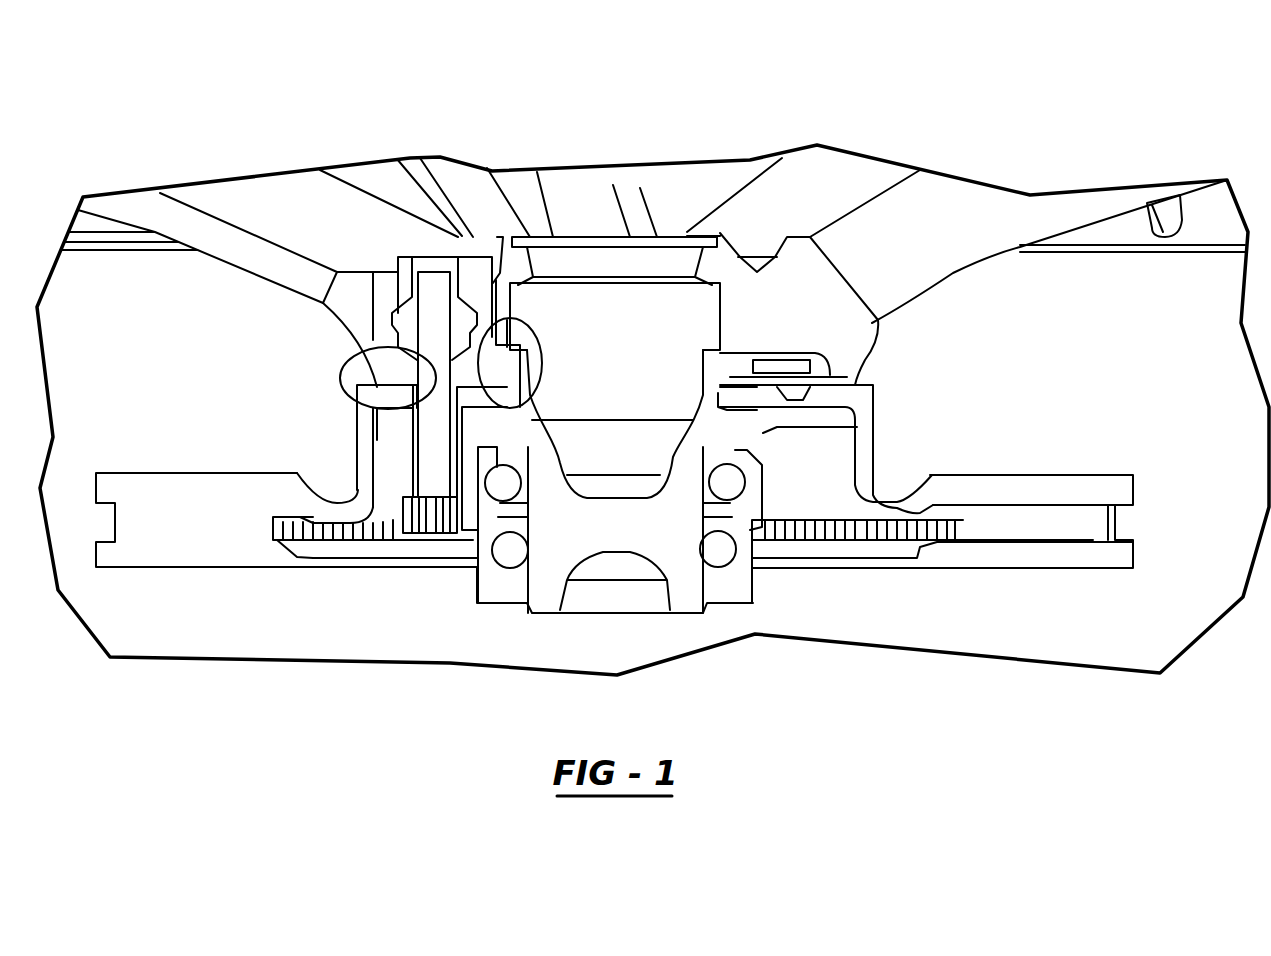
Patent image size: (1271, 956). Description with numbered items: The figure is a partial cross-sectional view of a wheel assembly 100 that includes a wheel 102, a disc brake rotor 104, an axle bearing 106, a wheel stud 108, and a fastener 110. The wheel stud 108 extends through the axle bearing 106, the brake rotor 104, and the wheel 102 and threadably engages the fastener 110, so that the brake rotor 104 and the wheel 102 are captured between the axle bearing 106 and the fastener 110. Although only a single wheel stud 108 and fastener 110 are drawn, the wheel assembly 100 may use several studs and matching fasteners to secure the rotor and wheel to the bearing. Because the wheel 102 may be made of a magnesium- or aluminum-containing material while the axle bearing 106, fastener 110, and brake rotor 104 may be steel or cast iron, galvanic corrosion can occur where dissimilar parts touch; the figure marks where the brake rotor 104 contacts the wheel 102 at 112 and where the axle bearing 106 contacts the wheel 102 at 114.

The wheel assembly 100 is at (962, 124).
The wheel 102 is at (167, 317).
The disc brake rotor 104 is at (218, 570).
The axle bearing 106 is at (622, 527).
The wheel stud 108 is at (437, 440).
The fastener 110 is at (410, 297).
The contact location between brake rotor and wheel 112 is at (343, 388).
The contact location between axle bearing and wheel 114 is at (527, 327).